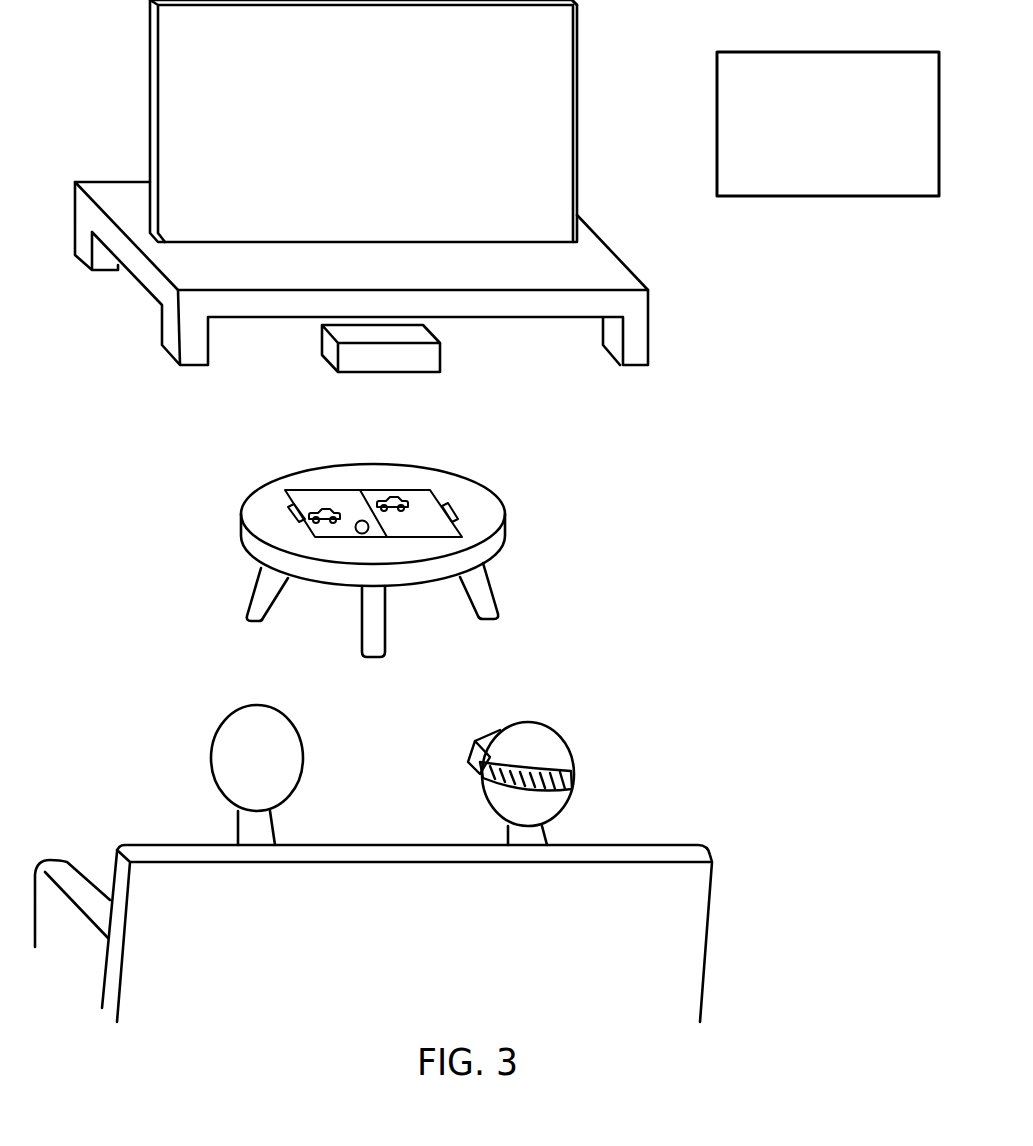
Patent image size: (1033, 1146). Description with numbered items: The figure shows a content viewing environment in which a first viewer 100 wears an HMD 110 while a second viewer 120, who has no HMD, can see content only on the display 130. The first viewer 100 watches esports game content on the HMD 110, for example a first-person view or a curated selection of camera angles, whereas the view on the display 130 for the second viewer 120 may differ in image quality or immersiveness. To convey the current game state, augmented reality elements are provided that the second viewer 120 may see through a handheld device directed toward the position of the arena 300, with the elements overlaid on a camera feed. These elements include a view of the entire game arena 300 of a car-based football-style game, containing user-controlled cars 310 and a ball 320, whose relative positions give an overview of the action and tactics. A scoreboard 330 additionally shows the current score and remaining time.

The first viewer 100 is at (592, 750).
The HMD 110 is at (480, 760).
The second viewer 120 is at (212, 752).
The display 130 is at (577, 121).
The game arena 300 is at (472, 536).
The user-controlled elements (cars) 310 is at (390, 497).
The ball 320 is at (363, 538).
The scoreboard 330 is at (827, 197).